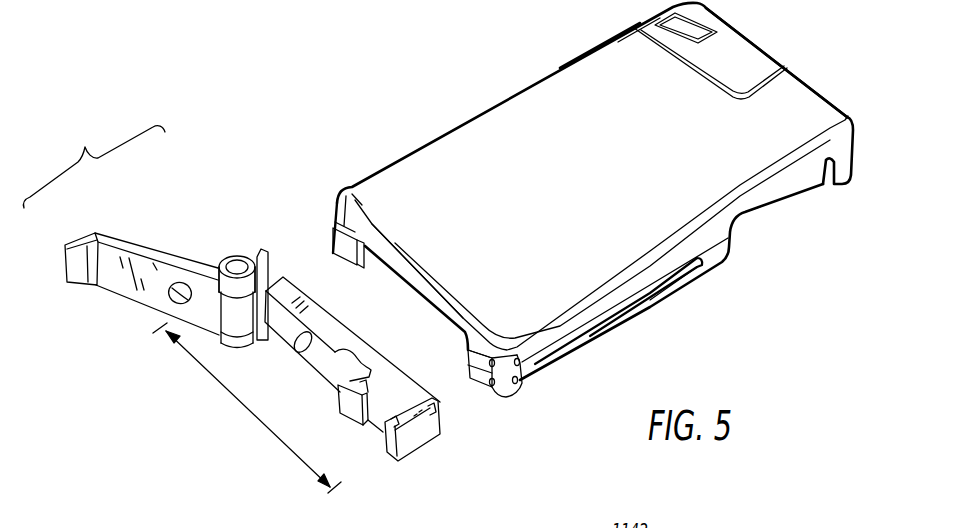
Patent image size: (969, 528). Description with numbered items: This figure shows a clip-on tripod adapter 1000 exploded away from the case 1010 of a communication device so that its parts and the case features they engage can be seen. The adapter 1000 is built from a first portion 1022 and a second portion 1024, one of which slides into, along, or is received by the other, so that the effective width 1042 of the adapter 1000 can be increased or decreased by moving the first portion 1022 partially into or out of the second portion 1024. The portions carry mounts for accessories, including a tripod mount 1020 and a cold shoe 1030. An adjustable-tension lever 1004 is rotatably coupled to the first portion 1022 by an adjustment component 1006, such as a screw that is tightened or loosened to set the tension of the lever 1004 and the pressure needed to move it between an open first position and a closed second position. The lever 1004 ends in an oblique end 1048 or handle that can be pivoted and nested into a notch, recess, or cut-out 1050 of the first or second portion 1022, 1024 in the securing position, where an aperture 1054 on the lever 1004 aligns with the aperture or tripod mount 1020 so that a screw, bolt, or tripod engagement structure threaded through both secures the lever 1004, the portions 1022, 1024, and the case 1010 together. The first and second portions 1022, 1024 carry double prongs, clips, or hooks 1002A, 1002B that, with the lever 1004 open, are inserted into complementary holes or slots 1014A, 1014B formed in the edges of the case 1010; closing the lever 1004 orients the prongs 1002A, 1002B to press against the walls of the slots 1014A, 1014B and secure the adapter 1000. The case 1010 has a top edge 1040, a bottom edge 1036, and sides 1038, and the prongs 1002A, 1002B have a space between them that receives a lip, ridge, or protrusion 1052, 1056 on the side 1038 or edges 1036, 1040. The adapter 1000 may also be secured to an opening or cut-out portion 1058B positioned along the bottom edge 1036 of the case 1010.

The clip-on tripod adapter 1000 is at (94, 166).
The double prongs, clips, or hooks 1002A is at (277, 268).
The double prongs, clips, or hooks 1002B is at (442, 403).
The adjustable-tension lever 1004 is at (158, 252).
The adjustment component 1006 is at (252, 258).
The case 1010 is at (503, 110).
The holes or slots 1014A is at (340, 238).
The holes or slots 1014B is at (507, 392).
The tripod mount 1020 is at (292, 355).
The first portion 1022 is at (257, 250).
The second portion 1024 is at (410, 447).
The cold shoe 1030 is at (376, 415).
The bottom edge 1036 is at (395, 258).
The side 1038 is at (567, 63).
The top edge 1040 is at (800, 80).
The effective width 1042 is at (247, 408).
The oblique end 1048 is at (78, 233).
The notch, recess, or cut-out 1050 is at (333, 381).
The lip, ridge or protrusion 1052 is at (333, 243).
The aperture 1054 is at (168, 292).
The lip, ridge or protrusion 1056 is at (637, 297).
The opening or cut-out portion 1058B is at (446, 333).